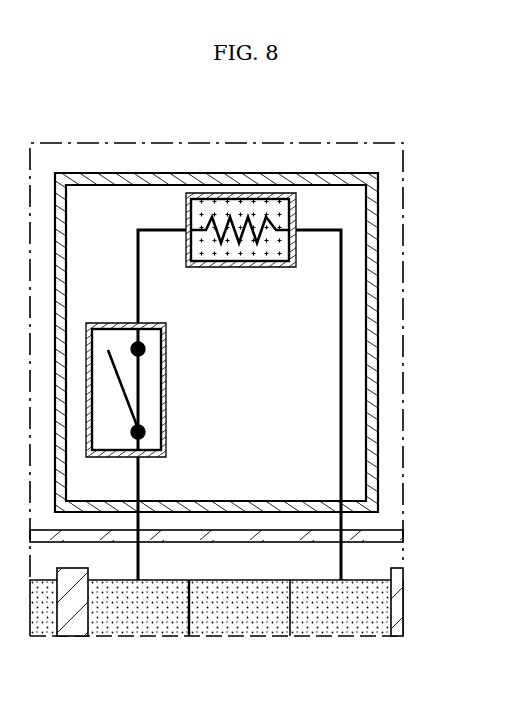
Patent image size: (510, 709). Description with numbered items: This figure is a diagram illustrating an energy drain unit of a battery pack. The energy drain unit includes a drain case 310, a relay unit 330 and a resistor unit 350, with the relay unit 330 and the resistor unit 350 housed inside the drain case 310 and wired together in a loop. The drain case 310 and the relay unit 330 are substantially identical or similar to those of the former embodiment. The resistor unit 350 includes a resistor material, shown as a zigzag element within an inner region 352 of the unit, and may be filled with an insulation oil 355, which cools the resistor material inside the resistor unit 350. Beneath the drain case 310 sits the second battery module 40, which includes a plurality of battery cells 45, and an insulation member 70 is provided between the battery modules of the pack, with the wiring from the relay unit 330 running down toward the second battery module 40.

The drain case 310 is at (378, 332).
The relay unit 330 is at (170, 386).
The resistor unit 350 is at (305, 186).
The heater body 352 is at (238, 198).
The insulation oil 355 is at (201, 196).
The second battery module 40 is at (237, 640).
The battery cells 45 is at (135, 615).
The insulation member 70 is at (72, 615).